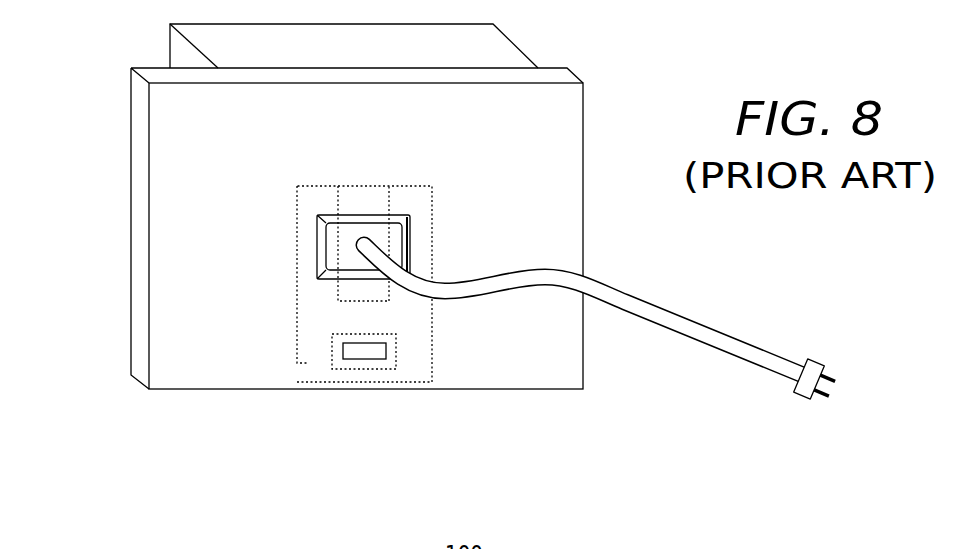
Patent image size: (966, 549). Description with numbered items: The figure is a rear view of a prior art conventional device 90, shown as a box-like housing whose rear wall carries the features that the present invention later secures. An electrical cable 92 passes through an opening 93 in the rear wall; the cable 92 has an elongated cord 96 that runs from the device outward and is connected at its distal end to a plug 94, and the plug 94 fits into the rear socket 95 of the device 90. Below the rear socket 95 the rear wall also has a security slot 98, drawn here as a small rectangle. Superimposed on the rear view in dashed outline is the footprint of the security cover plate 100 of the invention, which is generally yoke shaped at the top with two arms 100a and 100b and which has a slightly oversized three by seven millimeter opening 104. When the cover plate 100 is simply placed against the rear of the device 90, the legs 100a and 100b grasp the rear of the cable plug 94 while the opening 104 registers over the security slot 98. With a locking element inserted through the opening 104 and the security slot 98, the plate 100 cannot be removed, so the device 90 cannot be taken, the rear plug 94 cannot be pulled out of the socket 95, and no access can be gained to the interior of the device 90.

The conventional device 90 is at (183, 165).
The electrical cable 92 is at (520, 269).
The opening 93 is at (318, 280).
The plug 94 is at (413, 232).
The rear socket 95 is at (317, 229).
The elongated cord 96 is at (620, 297).
The security slot 98 is at (375, 355).
The security cover plate 100 is at (284, 366).
The arm 100a is at (418, 198).
The arm 100b is at (325, 197).
The opening 104 is at (340, 363).